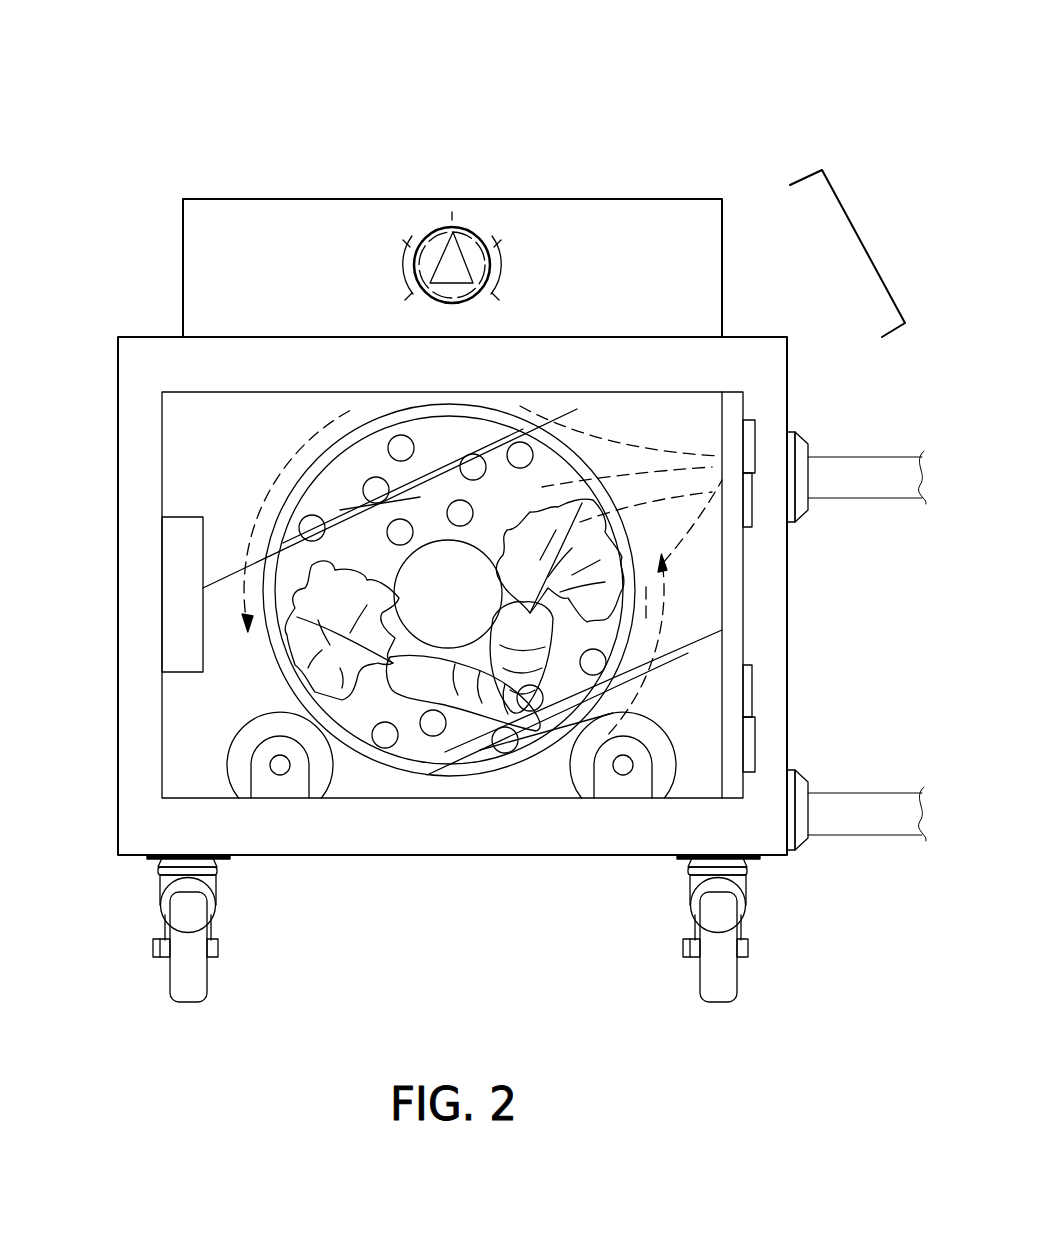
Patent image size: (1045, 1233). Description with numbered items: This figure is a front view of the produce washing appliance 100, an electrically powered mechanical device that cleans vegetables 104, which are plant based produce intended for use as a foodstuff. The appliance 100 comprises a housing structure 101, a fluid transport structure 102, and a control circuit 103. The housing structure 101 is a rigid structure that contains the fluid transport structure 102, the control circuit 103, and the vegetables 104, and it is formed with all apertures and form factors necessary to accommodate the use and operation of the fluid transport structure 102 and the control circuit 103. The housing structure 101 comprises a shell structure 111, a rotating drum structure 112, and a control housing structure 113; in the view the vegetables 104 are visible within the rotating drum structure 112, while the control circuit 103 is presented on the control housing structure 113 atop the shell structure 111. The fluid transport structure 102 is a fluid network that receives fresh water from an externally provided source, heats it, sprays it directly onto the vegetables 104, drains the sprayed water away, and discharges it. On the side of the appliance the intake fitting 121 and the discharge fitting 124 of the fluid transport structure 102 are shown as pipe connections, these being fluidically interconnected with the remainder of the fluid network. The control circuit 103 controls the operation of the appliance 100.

The produce washing appliance 100 is at (90, 103).
The housing structure 101 is at (865, 248).
The fluid transport structure 102 is at (863, 647).
The control circuit 103 is at (452, 265).
The vegetables 104 is at (483, 680).
The shell structure 111 is at (763, 362).
The rotating drum structure 112 is at (602, 500).
The control housing structure 113 is at (705, 287).
The intake fitting 121 is at (887, 468).
The discharge fitting 124 is at (887, 818).